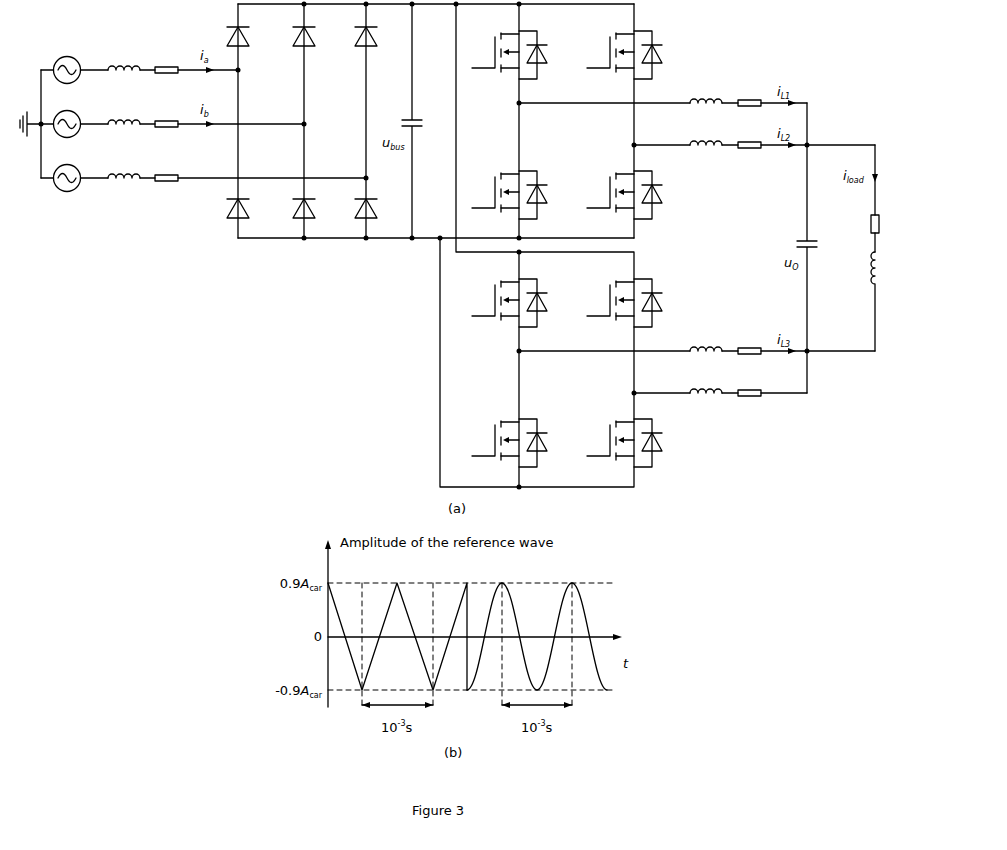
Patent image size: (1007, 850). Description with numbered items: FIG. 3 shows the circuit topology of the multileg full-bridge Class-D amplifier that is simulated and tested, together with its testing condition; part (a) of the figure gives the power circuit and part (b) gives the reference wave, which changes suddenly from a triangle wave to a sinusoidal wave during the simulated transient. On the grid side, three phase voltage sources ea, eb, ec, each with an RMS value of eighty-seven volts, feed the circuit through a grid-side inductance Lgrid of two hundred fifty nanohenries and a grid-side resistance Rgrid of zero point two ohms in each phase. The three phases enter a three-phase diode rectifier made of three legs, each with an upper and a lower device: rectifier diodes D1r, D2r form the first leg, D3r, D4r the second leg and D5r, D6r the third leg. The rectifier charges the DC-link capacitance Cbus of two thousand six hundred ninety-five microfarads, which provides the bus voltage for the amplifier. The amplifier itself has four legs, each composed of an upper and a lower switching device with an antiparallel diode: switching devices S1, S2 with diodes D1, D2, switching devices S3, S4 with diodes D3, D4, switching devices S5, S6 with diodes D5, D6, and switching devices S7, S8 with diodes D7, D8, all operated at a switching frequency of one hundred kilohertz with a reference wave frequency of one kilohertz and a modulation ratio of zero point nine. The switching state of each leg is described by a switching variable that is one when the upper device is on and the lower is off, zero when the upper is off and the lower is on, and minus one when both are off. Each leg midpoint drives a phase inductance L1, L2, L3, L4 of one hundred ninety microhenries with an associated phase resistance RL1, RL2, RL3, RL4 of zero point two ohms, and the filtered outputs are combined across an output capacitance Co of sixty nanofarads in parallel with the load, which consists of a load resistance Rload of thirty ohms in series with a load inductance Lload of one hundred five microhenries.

The grid-side phase voltage source ea is at (69, 63).
The grid-side phase voltage source eb is at (69, 117).
The grid-side phase voltage source ec is at (68, 170).
The grid-side inductance Lgrid is at (111, 113).
The grid-side resistance Rgrid is at (159, 114).
The rectifier diode D1r is at (226, 36).
The rectifier diode D2r is at (226, 208).
The rectifier diode D3r is at (292, 36).
The rectifier diode D4r is at (292, 208).
The rectifier diode D5r is at (354, 36).
The rectifier diode D6r is at (354, 208).
The DC-link capacitance Cbus is at (420, 121).
The switching device S1 is at (494, 52).
The switching device S2 is at (494, 192).
The switching device S3 is at (609, 52).
The switching device S4 is at (609, 192).
The switching device S5 is at (494, 300).
The switching device S6 is at (494, 440).
The switching device S7 is at (609, 300).
The switching device S8 is at (609, 440).
The antiparallel diode D1 is at (544, 55).
The antiparallel diode D2 is at (544, 195).
The antiparallel diode D3 is at (659, 55).
The antiparallel diode D4 is at (659, 195).
The antiparallel diode D5 is at (544, 303).
The antiparallel diode D6 is at (544, 443).
The antiparallel diode D7 is at (659, 303).
The antiparallel diode D8 is at (659, 443).
The phase inductance L1 is at (706, 93).
The phase inductance L2 is at (706, 135).
The phase inductance L3 is at (706, 341).
The phase inductance L4 is at (706, 383).
The phase resistance RL1 is at (748, 95).
The phase resistance RL2 is at (748, 137).
The phase resistance RL3 is at (748, 343).
The phase resistance RL4 is at (748, 385).
The output capacitance Co is at (801, 248).
The load resistance Rload is at (858, 198).
The load inductance Lload is at (857, 301).